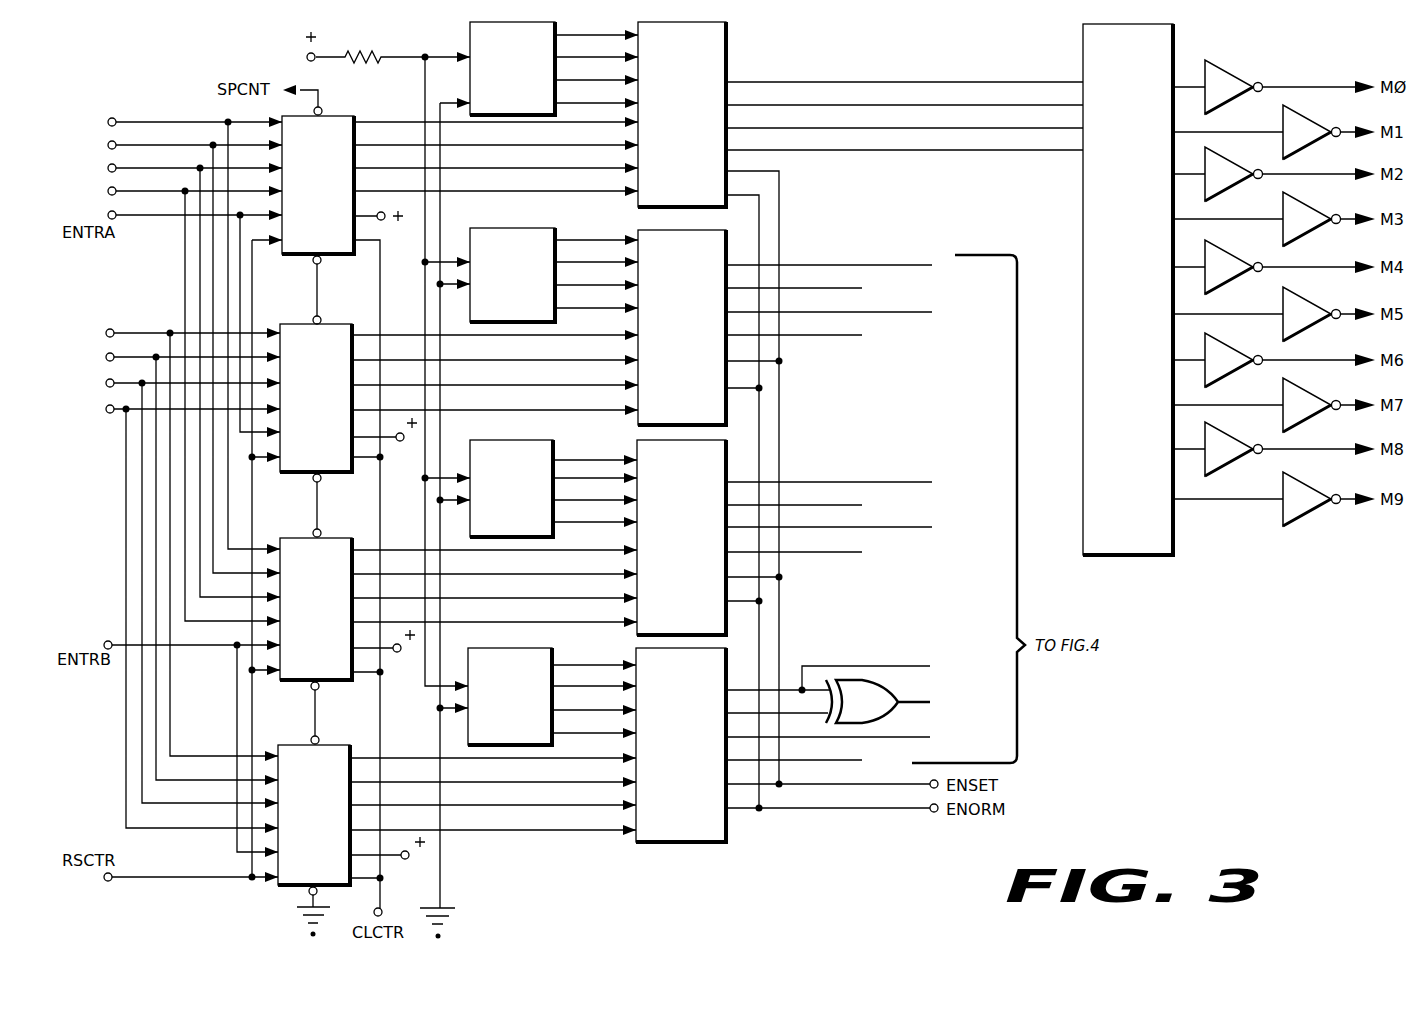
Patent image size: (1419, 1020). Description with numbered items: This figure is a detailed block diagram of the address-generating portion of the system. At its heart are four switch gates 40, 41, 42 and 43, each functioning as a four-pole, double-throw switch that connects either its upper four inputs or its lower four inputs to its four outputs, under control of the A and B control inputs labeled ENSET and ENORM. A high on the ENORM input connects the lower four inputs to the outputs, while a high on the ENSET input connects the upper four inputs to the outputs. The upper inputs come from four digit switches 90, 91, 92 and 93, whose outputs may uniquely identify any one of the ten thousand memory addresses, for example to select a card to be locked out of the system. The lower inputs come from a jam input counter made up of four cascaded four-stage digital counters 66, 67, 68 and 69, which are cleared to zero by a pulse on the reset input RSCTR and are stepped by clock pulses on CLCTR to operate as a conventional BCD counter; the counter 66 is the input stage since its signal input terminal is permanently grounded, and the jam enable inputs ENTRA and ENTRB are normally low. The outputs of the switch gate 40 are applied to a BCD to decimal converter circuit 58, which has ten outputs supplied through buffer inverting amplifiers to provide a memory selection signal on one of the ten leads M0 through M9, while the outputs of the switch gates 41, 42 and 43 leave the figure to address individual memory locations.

The switch gate 40 is at (728, 34).
The switch gate 41 is at (724, 233).
The switch gate 42 is at (724, 445).
The switch gate 43 is at (724, 654).
The BCD to decimal converter circuit 58 is at (1083, 34).
The digital counter 66 is at (330, 745).
The digital counter 67 is at (332, 539).
The digital counter 68 is at (332, 325).
The digital counter 69 is at (334, 115).
The switch 90 is at (556, 33).
The switch 91 is at (556, 238).
The switch 92 is at (555, 446).
The switch 93 is at (554, 657).